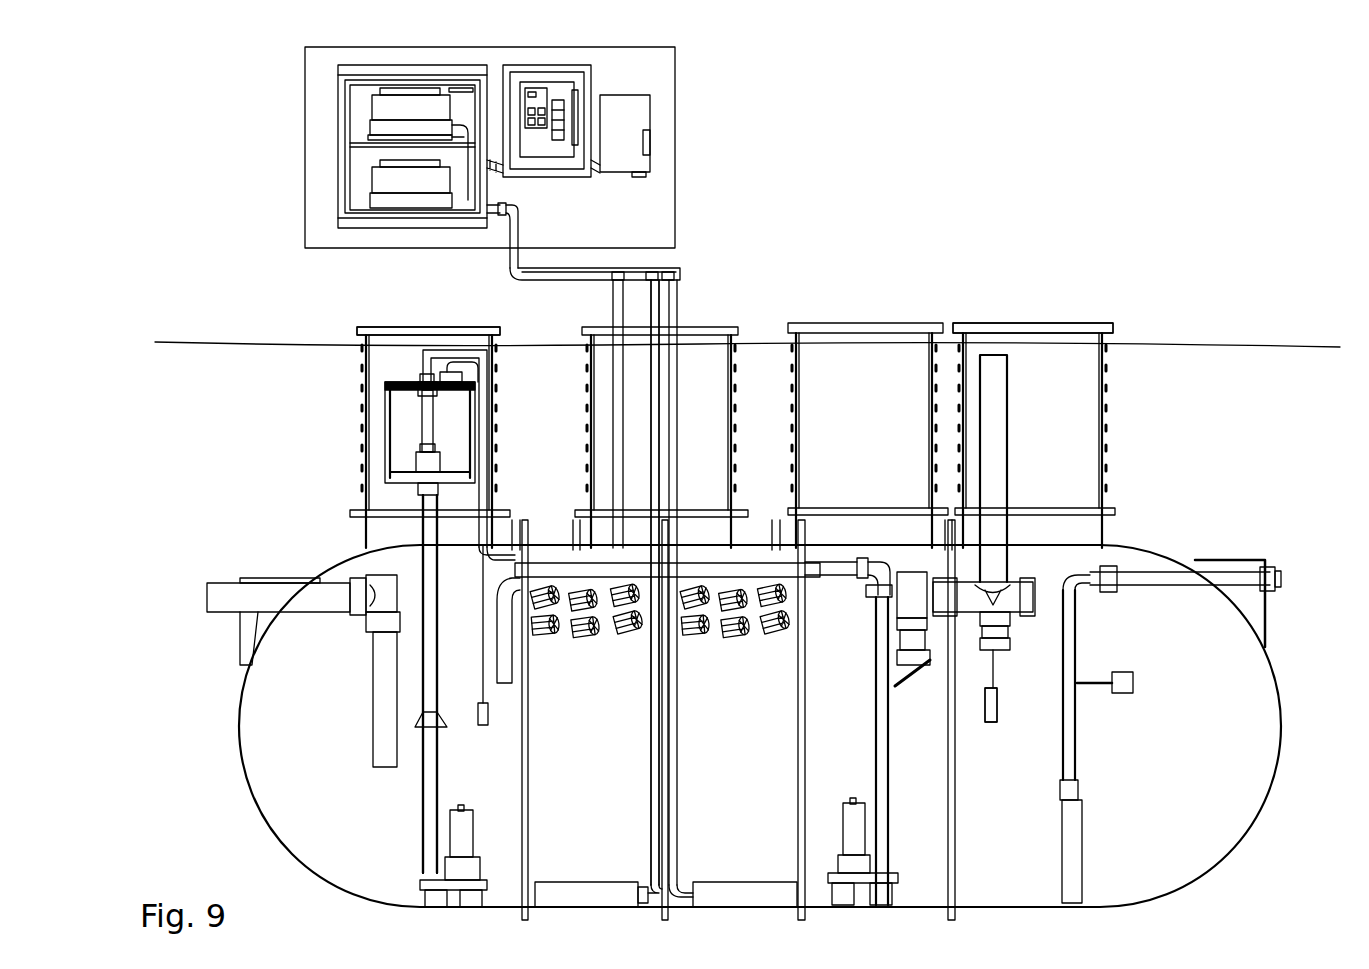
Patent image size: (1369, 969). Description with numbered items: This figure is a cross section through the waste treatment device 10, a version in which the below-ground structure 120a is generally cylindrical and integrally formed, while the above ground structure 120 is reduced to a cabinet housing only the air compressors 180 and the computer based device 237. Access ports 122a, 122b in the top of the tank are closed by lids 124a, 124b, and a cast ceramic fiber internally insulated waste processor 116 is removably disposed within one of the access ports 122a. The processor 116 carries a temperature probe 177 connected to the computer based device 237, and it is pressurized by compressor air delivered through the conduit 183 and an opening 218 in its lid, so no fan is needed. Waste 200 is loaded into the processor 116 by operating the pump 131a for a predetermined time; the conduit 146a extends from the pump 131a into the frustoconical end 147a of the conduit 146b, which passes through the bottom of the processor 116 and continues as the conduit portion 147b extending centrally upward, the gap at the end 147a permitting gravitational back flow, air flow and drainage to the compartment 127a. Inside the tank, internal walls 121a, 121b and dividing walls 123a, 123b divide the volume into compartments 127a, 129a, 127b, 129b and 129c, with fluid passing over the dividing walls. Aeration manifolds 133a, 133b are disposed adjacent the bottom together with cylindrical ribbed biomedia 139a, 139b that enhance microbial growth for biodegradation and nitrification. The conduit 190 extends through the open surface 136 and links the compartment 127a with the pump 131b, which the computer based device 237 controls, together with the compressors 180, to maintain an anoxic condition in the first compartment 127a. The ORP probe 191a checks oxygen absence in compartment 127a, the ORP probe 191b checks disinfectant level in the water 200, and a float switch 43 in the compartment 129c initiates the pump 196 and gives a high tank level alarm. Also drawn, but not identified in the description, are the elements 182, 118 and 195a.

The waste treatment device 10 is at (1055, 170).
The above ground structure 120 is at (675, 135).
The computer based device 237 is at (592, 82).
The air compressors 180 is at (372, 180).
The air supply line 182 is at (527, 232).
The conduit 183 is at (628, 297).
The opening 218 is at (430, 378).
The lids 124a is at (455, 327).
The lids 124b is at (1020, 323).
The access ports 122a is at (362, 362).
The access ports 122b is at (792, 380).
The temperature probe 177 is at (450, 400).
The waste processor 116 is at (387, 422).
The conduit portion 147b is at (420, 450).
The conduit 146b is at (420, 525).
The conduit 190 is at (568, 560).
The outlet pipe 118 is at (1000, 435).
The open surface 136 is at (250, 605).
The waste 200 is at (280, 695).
The ORP probe 191a is at (480, 705).
The funnel 195a is at (392, 690).
The frustoconical end 147a is at (385, 695).
The dividing wall 123a is at (512, 725).
The conduit 146a is at (430, 780).
The structure 120a is at (300, 868).
The compartment 127a is at (365, 870).
The biomedia 139a is at (615, 640).
The biomedia 139b is at (750, 640).
The pump 131a is at (530, 815).
The aeration manifold 133a is at (570, 882).
The internal wall 121a is at (666, 748).
The pump 131b is at (800, 815).
The manifold 133b is at (722, 885).
The dividing wall 123b is at (870, 840).
The internal wall 121b is at (957, 800).
The ORP probe 191b is at (997, 690).
The float switch 43 is at (1125, 694).
The pump 196 is at (1070, 840).
The compartment 129a is at (645, 885).
The compartment 127b is at (778, 850).
The compartment 129b is at (858, 850).
The compartment 129c is at (1150, 875).